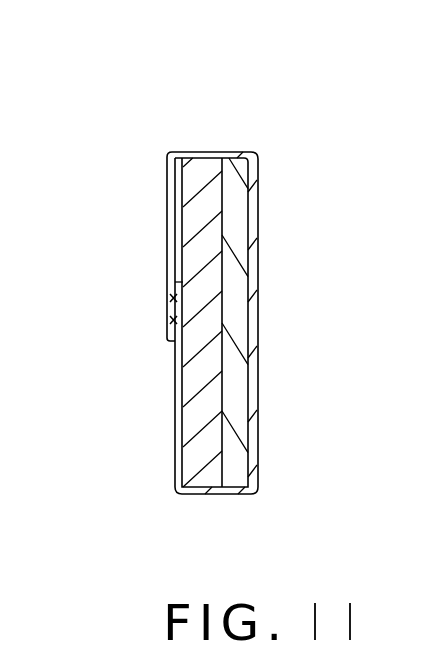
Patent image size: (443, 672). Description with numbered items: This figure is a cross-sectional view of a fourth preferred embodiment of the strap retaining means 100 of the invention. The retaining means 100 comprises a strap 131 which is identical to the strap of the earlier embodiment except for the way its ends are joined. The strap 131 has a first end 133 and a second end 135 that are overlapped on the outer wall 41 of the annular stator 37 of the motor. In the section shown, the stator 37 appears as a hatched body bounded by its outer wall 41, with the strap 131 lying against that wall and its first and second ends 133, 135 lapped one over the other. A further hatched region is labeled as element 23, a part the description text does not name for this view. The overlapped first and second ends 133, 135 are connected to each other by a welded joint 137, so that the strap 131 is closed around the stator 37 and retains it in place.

The retaining means 100 is at (145, 268).
The strap 131 is at (257, 263).
The first end 133 is at (175, 189).
The welded joint 137 is at (173, 320).
The outer wall 41 is at (183, 380).
The second end 135 is at (183, 420).
The stator 37 is at (200, 175).
The filler 23 is at (238, 318).